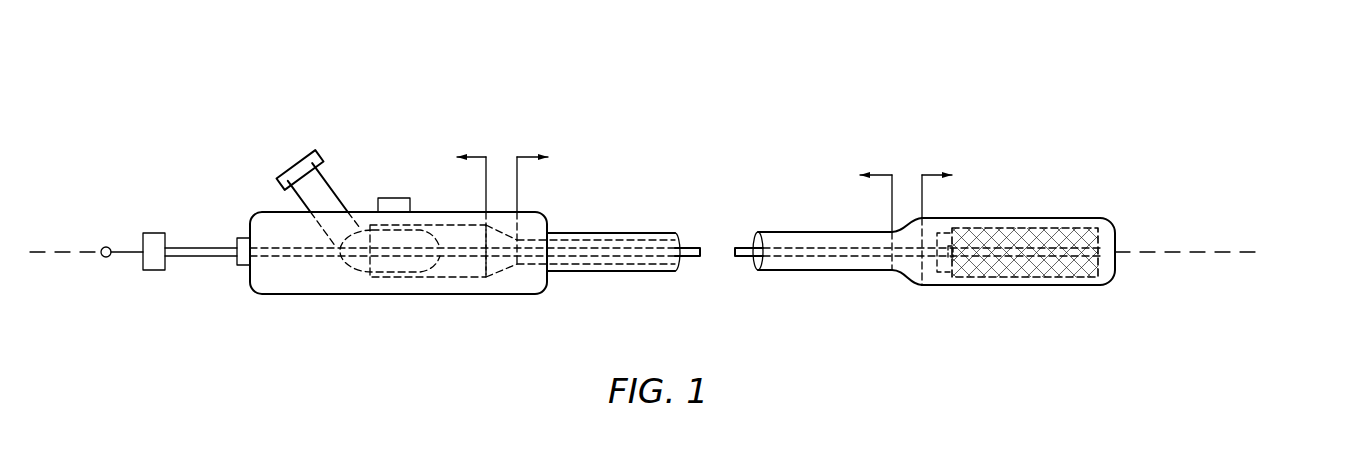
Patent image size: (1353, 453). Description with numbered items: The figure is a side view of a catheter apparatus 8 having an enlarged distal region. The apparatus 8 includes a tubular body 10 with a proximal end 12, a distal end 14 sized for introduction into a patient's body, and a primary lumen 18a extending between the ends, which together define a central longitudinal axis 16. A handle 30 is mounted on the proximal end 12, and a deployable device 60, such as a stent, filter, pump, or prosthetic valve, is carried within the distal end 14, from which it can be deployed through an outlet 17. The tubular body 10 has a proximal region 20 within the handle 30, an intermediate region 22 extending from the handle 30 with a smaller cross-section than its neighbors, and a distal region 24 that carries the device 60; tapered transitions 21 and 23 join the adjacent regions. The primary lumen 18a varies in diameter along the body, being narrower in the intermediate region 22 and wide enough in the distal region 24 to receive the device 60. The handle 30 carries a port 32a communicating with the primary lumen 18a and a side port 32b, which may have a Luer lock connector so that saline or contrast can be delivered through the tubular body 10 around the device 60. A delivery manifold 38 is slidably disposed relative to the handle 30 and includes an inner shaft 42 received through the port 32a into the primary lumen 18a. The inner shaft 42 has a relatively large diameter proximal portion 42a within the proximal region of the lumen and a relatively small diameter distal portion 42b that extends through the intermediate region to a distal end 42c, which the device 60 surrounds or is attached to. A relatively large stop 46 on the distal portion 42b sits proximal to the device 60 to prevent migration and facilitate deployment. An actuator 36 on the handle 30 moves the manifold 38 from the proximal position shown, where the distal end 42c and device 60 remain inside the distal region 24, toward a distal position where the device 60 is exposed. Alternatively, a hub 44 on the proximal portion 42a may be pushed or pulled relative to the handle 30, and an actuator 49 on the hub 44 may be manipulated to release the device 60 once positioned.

The apparatus 8 is at (667, 123).
The tubular body 10 is at (788, 217).
The proximal end 12 is at (380, 278).
The distal end 14 is at (1053, 285).
The central longitudinal axis 16 is at (65, 248).
The outlet 17 is at (1115, 263).
The primary lumen 18a is at (820, 263).
The proximal region 20 is at (475, 201).
The transition 21 is at (503, 271).
The intermediate region 22 is at (707, 197).
The transition 23 is at (905, 227).
The distal region 24 is at (936, 215).
The handle 30 is at (435, 160).
The port 32a is at (243, 267).
The side port 32b is at (303, 158).
The actuator 36 is at (393, 198).
The delivery manifold 38 is at (202, 220).
The inner shaft 42 is at (688, 240).
The proximal portion 42a is at (422, 268).
The distal portion 42b is at (750, 258).
The distal end 42c is at (902, 257).
The hub 44 is at (153, 270).
The stop 46 is at (940, 280).
The actuator 49 is at (106, 262).
The deployable device 60 is at (1052, 227).